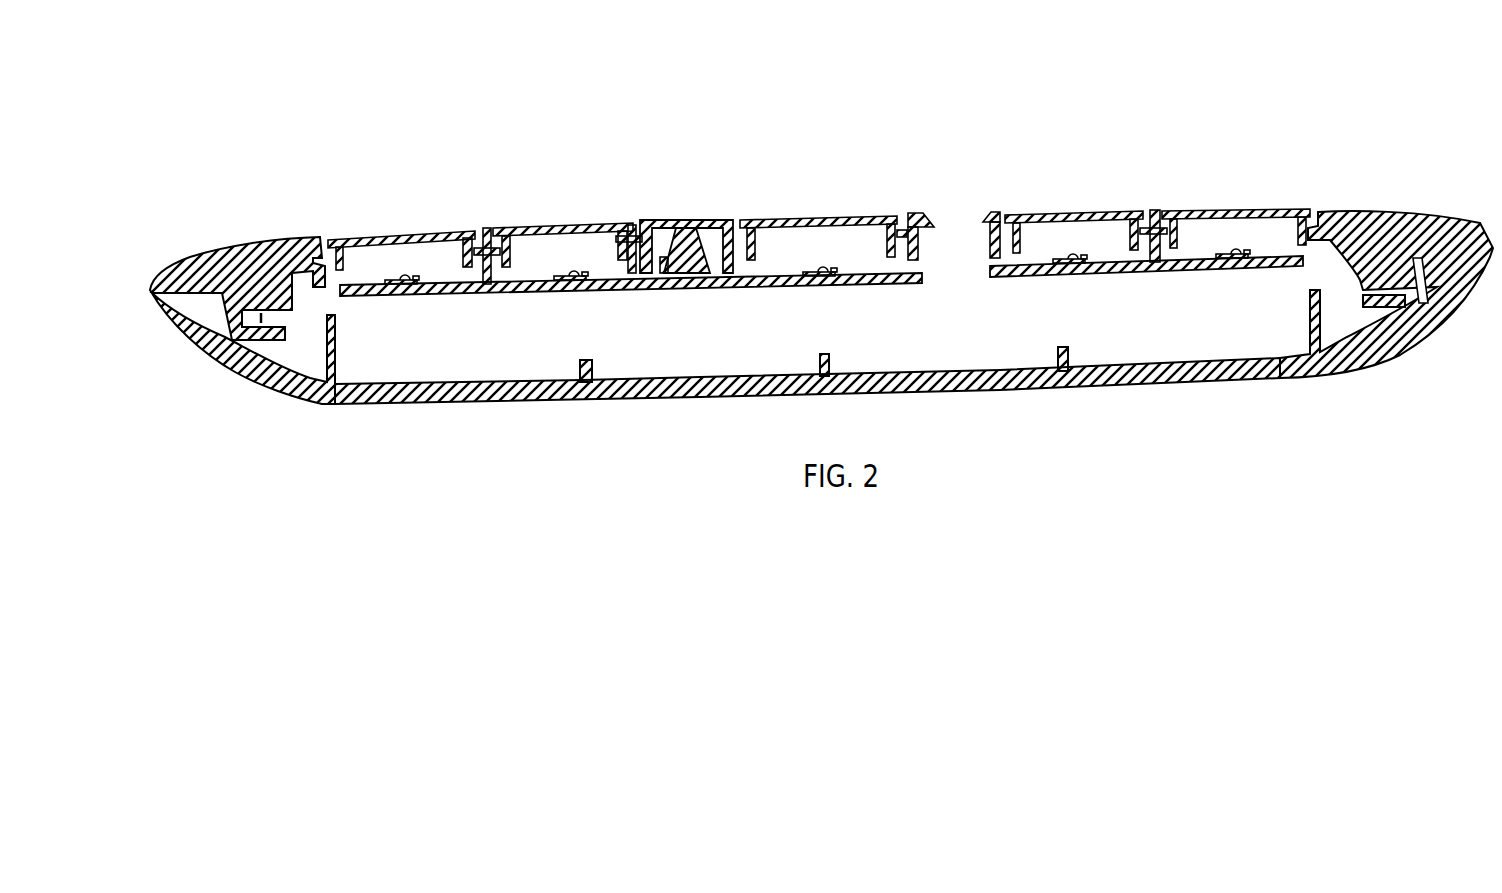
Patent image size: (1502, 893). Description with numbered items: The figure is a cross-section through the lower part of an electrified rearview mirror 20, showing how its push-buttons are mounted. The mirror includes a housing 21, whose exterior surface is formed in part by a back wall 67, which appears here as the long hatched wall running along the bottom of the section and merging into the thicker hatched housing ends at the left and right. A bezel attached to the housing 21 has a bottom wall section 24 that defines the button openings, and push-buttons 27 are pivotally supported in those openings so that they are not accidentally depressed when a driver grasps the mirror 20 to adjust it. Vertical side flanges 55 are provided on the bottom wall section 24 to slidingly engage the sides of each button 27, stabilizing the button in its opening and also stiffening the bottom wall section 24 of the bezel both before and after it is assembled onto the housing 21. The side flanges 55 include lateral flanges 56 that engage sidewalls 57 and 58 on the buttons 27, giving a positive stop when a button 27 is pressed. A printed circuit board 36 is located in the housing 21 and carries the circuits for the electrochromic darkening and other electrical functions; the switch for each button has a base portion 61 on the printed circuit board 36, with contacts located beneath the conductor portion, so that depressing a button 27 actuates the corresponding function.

The electrified rearview mirror 20 is at (1152, 80).
The housing 21 is at (320, 412).
The bottom wall section 24 is at (706, 216).
The push-button 27 is at (438, 237).
The printed circuit board 36 is at (707, 277).
The vertical side flange 55 is at (318, 280).
The lateral flange 56 is at (481, 280).
The sidewall 57 is at (460, 257).
The sidewall 58 is at (340, 262).
The base portion 61 is at (420, 270).
The back wall 67 is at (493, 401).